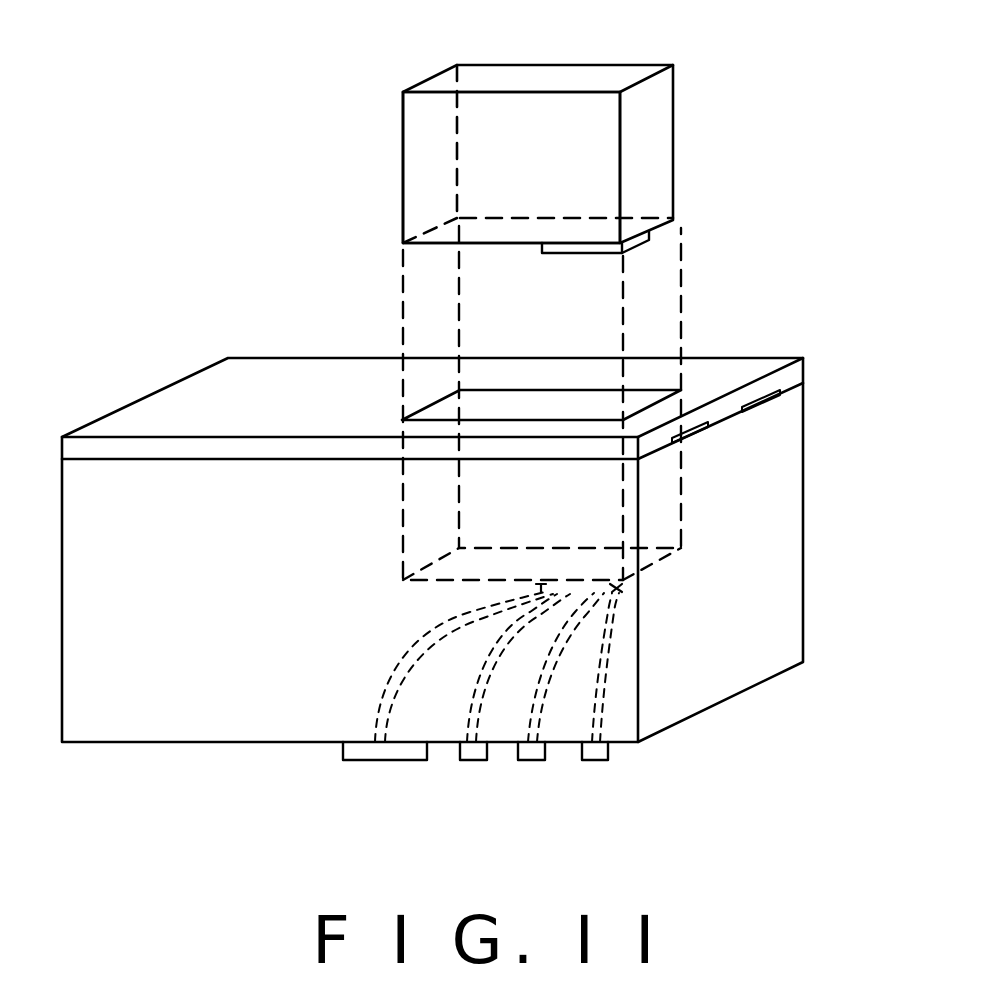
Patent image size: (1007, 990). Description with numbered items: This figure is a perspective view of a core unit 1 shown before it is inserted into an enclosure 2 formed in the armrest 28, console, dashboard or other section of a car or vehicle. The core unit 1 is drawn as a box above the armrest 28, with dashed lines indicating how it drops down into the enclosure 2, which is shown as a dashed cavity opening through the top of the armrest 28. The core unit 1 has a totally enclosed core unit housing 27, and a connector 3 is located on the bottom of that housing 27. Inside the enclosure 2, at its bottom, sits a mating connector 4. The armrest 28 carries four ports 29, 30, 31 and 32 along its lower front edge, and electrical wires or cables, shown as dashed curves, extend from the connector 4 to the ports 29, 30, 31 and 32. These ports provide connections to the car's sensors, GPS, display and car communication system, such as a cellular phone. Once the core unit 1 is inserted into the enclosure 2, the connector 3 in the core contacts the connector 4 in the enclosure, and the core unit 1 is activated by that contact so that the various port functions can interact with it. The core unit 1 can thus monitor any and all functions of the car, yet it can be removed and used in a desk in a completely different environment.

The core unit 1 is at (677, 115).
The core unit housing 27 is at (433, 157).
The connector 3 is at (634, 247).
The armrest 28 is at (805, 522).
The enclosure 2 is at (420, 520).
The connector 4 is at (618, 586).
The port 29 is at (382, 760).
The port 30 is at (473, 762).
The port 31 is at (532, 762).
The port 32 is at (595, 762).